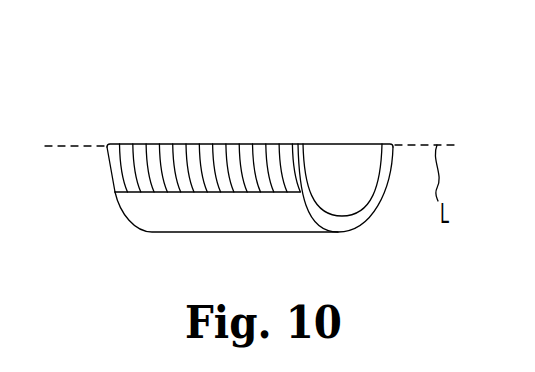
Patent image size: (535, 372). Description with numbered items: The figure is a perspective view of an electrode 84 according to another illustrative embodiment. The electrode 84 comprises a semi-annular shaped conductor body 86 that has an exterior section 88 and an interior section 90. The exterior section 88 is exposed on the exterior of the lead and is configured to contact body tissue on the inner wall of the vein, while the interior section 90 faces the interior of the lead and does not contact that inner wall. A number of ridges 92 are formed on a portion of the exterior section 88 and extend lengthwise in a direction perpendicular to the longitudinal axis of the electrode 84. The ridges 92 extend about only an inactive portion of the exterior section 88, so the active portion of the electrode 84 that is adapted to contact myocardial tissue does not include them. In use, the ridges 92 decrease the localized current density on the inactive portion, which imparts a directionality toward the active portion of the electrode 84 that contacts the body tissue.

The electrode 84 is at (298, 84).
The conductor body 86 is at (361, 222).
The exterior section 88 is at (112, 172).
The interior section 90 is at (350, 158).
The ridges 92 is at (188, 158).